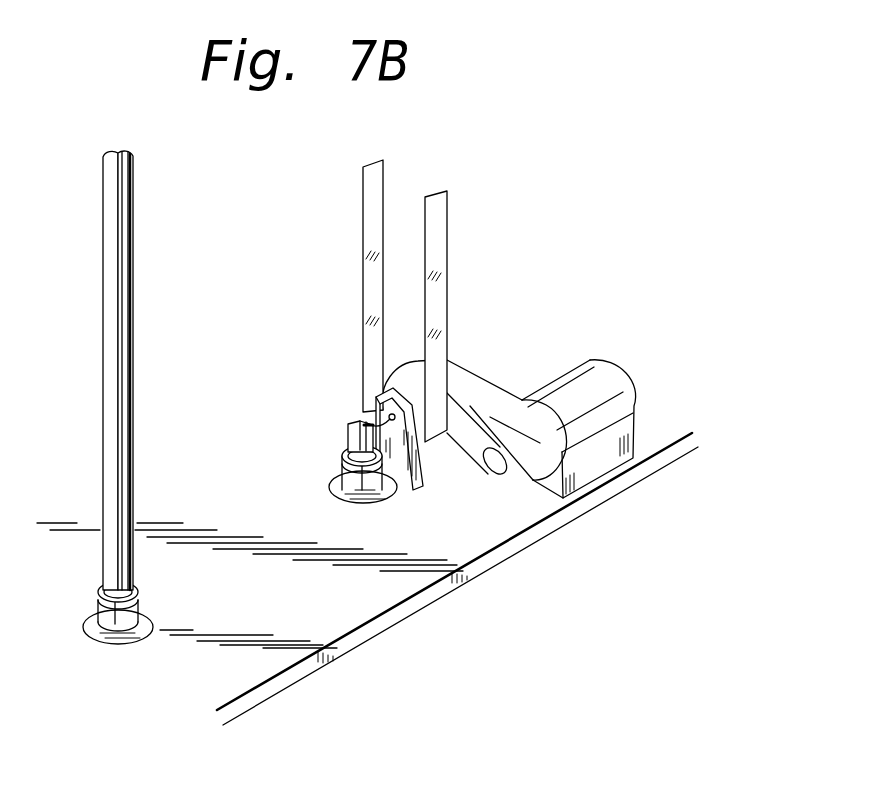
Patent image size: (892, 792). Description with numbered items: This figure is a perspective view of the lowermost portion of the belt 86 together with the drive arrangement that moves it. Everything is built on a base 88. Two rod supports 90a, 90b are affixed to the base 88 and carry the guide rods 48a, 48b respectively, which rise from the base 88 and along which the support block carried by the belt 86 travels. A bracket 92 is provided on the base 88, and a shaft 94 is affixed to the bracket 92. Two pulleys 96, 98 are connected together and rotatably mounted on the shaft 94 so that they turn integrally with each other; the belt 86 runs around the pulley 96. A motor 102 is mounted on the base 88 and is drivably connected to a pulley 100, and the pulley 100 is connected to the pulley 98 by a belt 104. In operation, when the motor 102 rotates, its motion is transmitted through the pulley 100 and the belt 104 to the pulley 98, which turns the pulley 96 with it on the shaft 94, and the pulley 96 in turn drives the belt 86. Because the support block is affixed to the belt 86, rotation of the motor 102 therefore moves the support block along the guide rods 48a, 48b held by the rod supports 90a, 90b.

The guide rod 48a is at (118, 473).
The guide rod 48b is at (348, 435).
The belt 86 is at (435, 228).
The base 88 is at (430, 593).
The rod support 90a is at (128, 616).
The rod support 90b is at (340, 486).
The bracket 92 is at (408, 480).
The shaft 94 is at (345, 448).
The pulley 96 is at (372, 407).
The pulley 98 is at (452, 458).
The pulley 100 is at (487, 468).
The motor 102 is at (588, 392).
The belt 104 is at (467, 387).